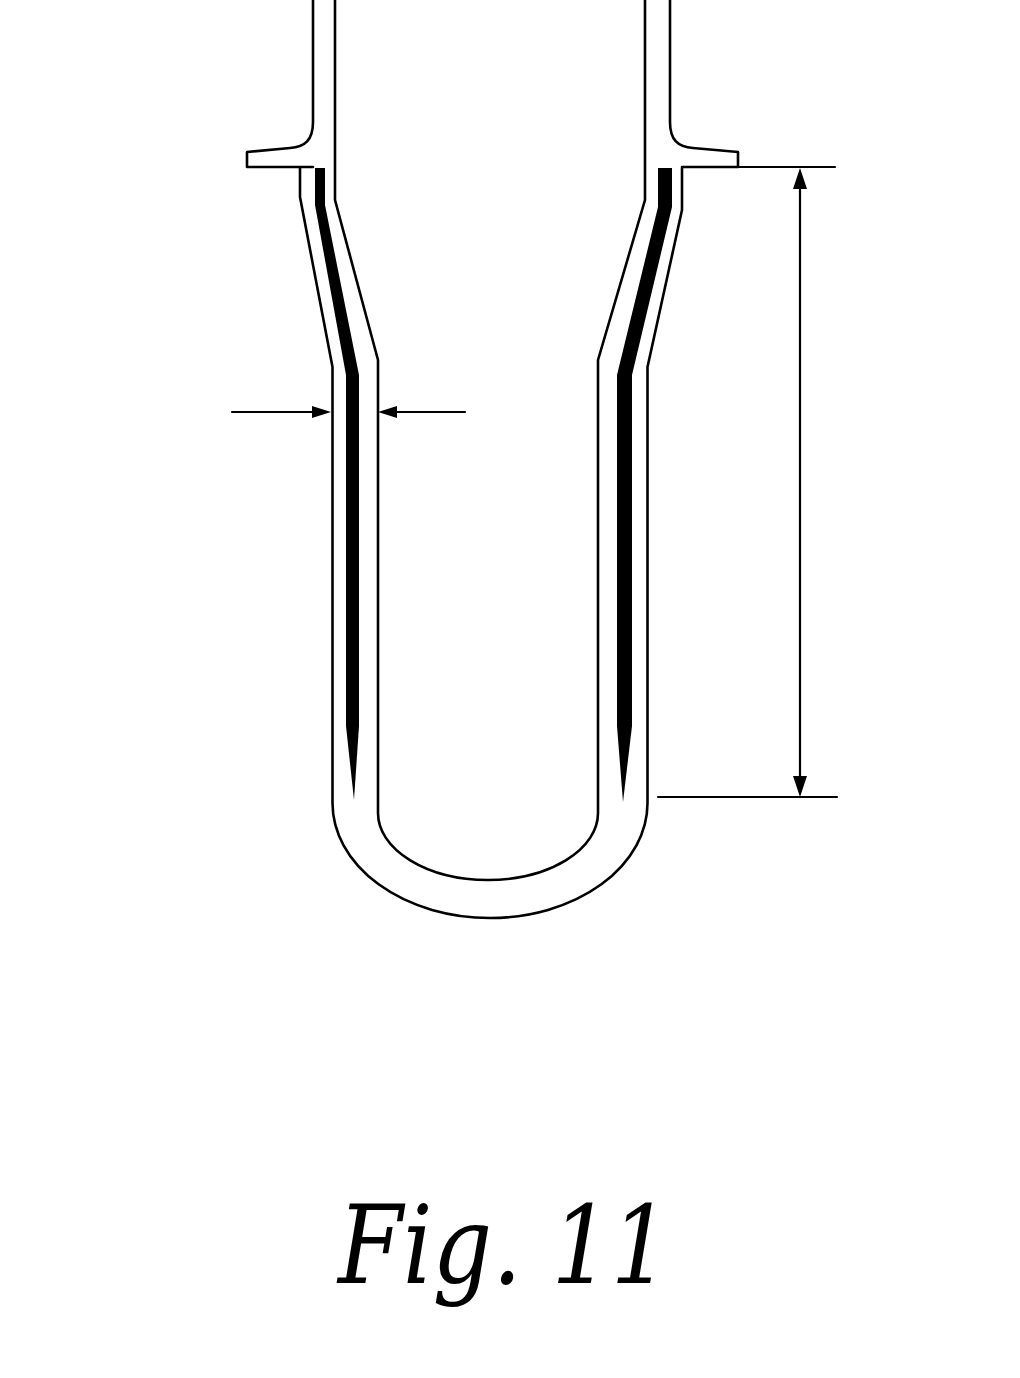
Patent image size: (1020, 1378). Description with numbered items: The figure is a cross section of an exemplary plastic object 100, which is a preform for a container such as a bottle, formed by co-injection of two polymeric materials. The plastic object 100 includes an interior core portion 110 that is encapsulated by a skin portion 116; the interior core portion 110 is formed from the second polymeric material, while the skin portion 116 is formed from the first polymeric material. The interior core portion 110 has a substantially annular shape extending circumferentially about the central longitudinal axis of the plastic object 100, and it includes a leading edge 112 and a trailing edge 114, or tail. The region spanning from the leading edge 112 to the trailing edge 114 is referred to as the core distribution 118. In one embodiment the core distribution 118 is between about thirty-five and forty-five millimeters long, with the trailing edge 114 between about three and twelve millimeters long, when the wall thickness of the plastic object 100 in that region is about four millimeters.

The plastic object 100 is at (362, 940).
The interior core portion 110 is at (332, 597).
The leading edge 112 is at (300, 167).
The trailing edge 114 is at (340, 797).
The skin portion 116 is at (386, 416).
The core distribution 118 is at (800, 522).